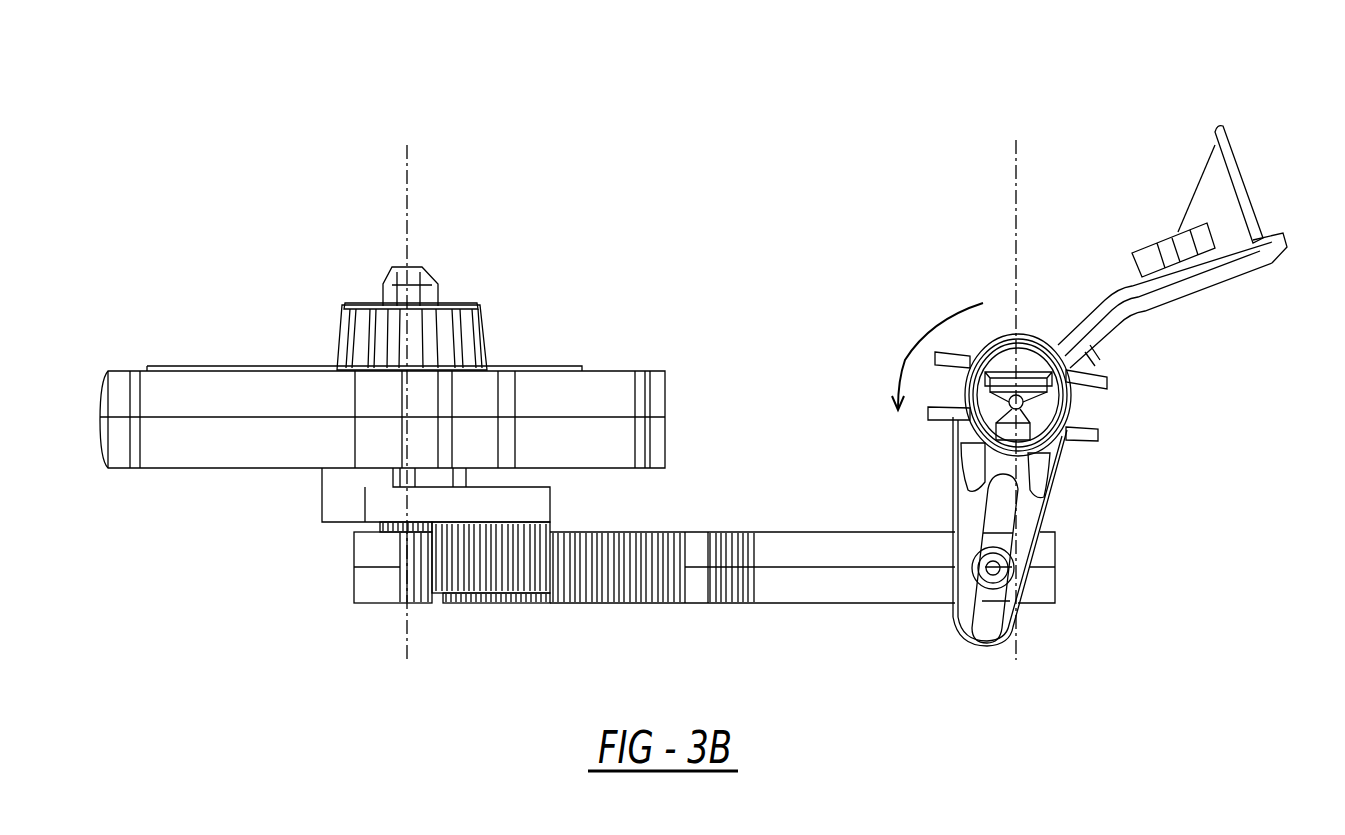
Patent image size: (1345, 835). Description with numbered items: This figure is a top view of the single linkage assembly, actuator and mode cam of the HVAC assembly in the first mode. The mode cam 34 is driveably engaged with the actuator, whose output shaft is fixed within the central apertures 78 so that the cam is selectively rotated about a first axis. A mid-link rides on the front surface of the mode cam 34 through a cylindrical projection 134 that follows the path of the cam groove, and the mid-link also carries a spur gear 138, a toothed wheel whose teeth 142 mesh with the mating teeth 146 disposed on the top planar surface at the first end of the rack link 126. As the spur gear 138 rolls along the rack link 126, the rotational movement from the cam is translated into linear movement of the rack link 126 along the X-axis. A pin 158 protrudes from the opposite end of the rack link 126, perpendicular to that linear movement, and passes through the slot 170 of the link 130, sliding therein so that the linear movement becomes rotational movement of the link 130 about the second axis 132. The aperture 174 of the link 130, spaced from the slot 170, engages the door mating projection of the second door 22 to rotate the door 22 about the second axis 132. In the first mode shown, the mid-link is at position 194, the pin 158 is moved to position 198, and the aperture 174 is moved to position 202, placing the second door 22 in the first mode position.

The second door 22 is at (1217, 193).
The mode cam 34 is at (100, 392).
The central apertures 78 is at (428, 270).
The rack link 126 is at (843, 532).
The link 130 is at (1032, 513).
The second axis 132 is at (1014, 208).
The projection 134 is at (345, 468).
The spur gear 138 is at (505, 603).
The teeth 142 is at (520, 570).
The teeth 146 is at (660, 585).
The pin 158 is at (997, 567).
The slot 170 is at (988, 503).
The aperture 174 is at (1040, 425).
The position 194 is at (445, 603).
The position 198 is at (1042, 592).
The position 202 is at (918, 338).